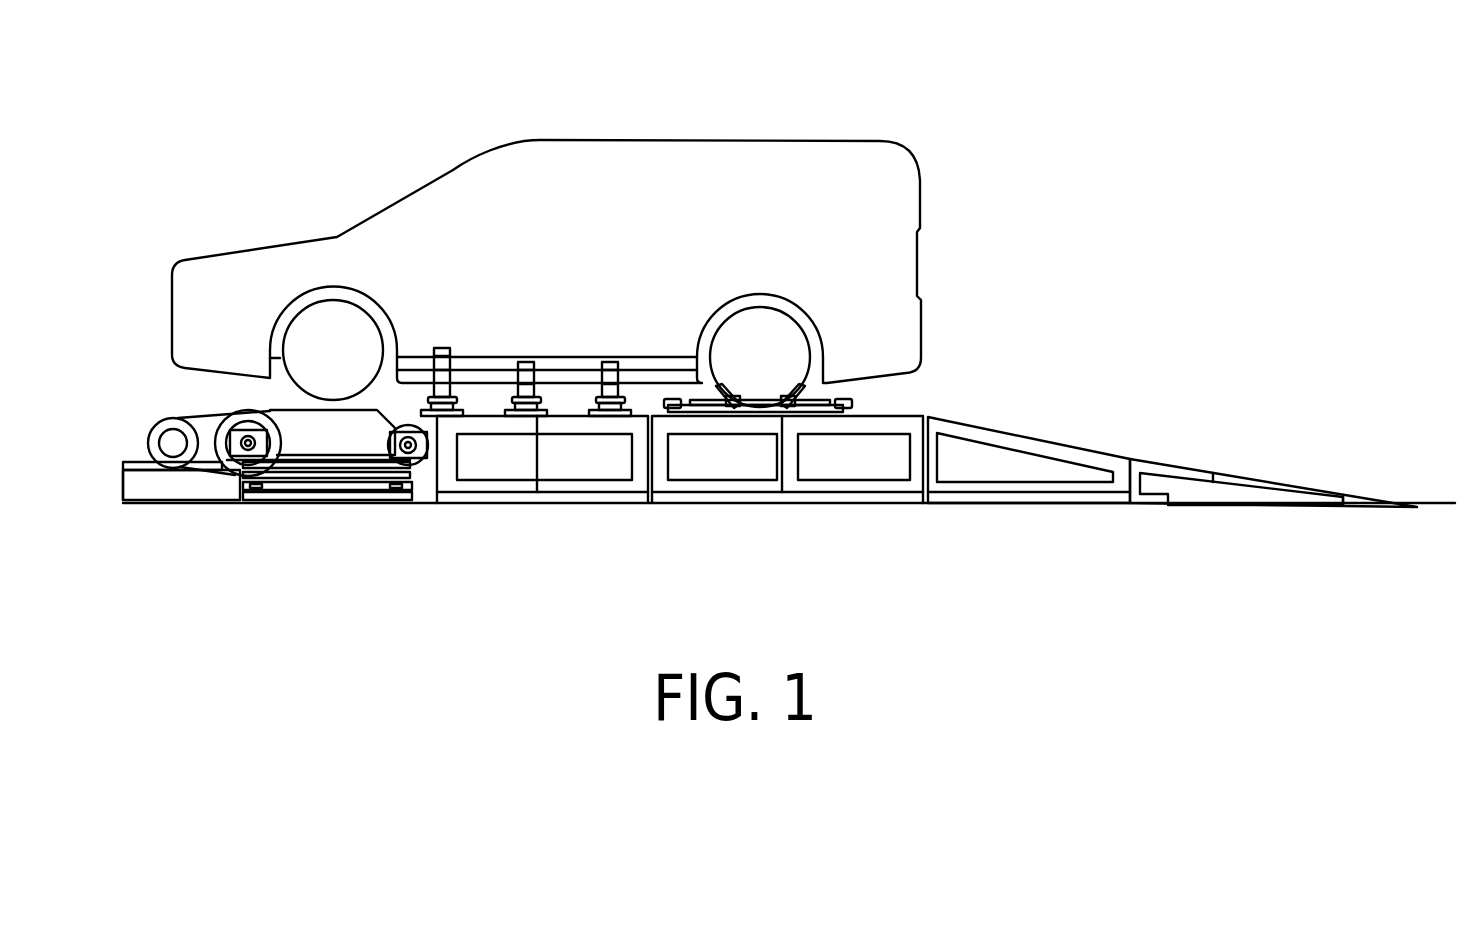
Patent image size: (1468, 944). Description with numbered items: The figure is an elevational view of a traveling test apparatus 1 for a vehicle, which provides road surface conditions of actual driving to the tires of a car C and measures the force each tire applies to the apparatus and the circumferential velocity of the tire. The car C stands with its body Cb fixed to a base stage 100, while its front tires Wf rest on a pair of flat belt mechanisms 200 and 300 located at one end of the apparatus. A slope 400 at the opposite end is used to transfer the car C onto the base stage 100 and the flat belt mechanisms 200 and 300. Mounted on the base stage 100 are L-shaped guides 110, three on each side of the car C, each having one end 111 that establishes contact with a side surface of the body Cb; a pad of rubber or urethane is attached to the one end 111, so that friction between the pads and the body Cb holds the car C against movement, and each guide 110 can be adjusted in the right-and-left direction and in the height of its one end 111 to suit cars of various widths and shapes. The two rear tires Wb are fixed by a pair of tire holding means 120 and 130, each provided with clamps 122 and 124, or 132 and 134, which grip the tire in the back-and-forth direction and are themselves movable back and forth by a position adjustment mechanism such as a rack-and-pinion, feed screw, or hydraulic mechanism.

The traveling test apparatus 1 is at (1076, 86).
The car C is at (692, 122).
The body Cb is at (800, 138).
The front tires Wf is at (308, 302).
The rear tires Wb is at (800, 347).
The base stage 100 is at (742, 487).
The L-shaped guides 110 is at (557, 402).
The one end 111 is at (612, 362).
The tire holding means 120 is at (846, 321).
The tire holding means 130 is at (872, 400).
The clamp 122 is at (686, 334).
The clamp 132 is at (727, 383).
The clamp 124 is at (813, 319).
The clamp 134 is at (787, 383).
The flat belt mechanism 200 is at (275, 513).
The flat belt mechanism 300 is at (287, 512).
The slope 400 is at (1285, 480).